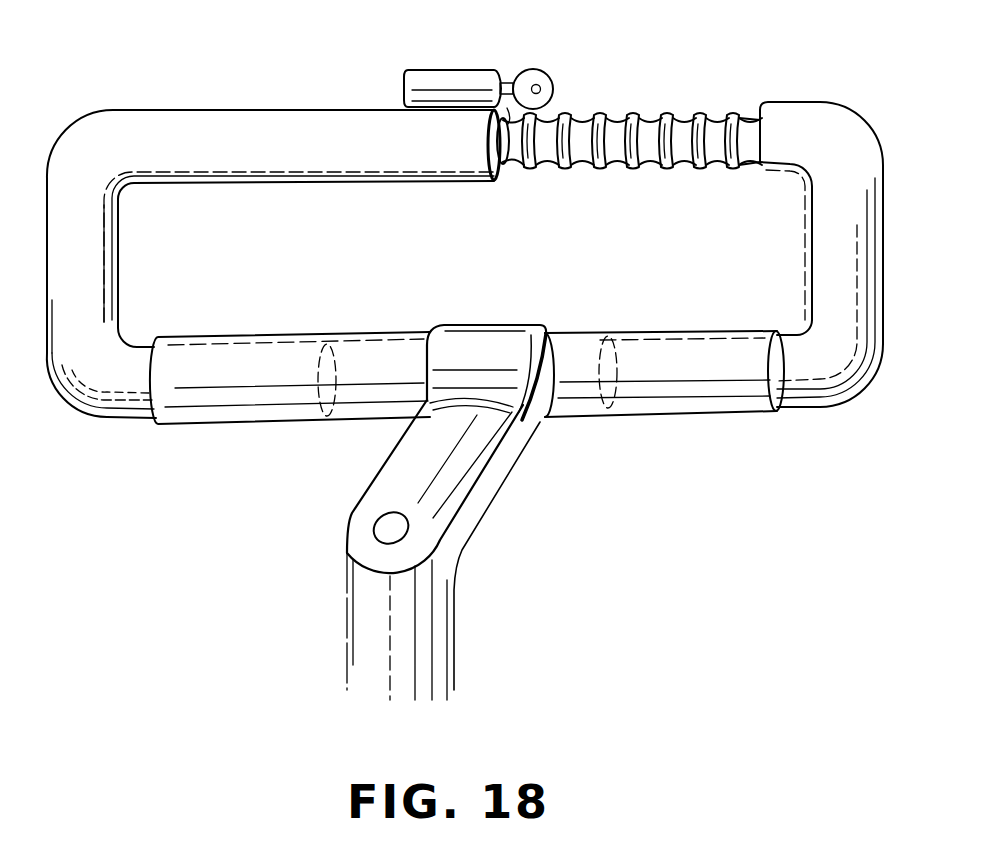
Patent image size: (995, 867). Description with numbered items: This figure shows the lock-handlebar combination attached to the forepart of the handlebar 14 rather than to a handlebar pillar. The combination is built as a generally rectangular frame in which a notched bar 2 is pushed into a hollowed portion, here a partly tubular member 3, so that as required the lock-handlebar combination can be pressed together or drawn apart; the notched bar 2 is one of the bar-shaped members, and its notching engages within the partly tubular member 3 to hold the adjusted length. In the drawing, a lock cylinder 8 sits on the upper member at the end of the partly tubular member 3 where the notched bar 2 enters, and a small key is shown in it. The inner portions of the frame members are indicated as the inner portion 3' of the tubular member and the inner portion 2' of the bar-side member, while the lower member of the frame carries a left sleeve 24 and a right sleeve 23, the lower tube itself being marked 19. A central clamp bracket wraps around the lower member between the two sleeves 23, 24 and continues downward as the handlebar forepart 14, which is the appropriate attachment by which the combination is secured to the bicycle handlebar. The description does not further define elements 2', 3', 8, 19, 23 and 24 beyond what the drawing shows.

The notched bar 2 is at (629, 104).
The right frame arm 2' is at (806, 223).
The partly tubular member 3 is at (273, 192).
The inner frame tube portion 3' is at (151, 263).
The lock cylinder 8 is at (456, 76).
The forepart of the handlebar 14 is at (475, 507).
The bottom tube 19 is at (207, 424).
The right sleeve 23 is at (657, 347).
The left sleeve 24 is at (265, 362).